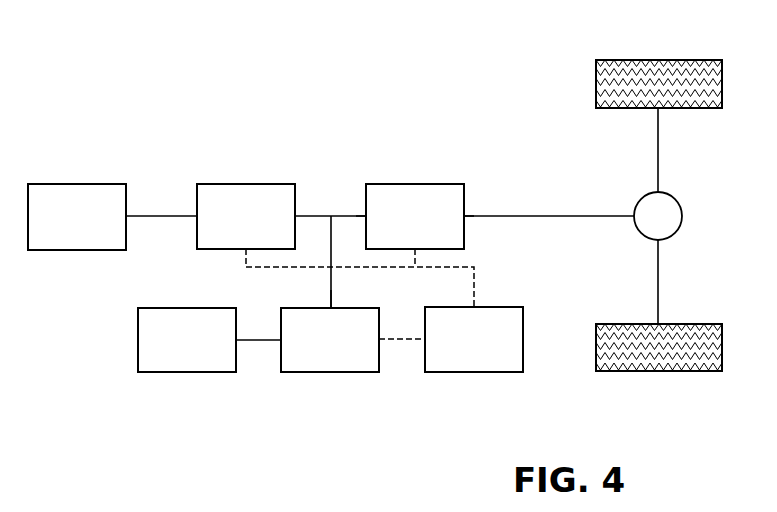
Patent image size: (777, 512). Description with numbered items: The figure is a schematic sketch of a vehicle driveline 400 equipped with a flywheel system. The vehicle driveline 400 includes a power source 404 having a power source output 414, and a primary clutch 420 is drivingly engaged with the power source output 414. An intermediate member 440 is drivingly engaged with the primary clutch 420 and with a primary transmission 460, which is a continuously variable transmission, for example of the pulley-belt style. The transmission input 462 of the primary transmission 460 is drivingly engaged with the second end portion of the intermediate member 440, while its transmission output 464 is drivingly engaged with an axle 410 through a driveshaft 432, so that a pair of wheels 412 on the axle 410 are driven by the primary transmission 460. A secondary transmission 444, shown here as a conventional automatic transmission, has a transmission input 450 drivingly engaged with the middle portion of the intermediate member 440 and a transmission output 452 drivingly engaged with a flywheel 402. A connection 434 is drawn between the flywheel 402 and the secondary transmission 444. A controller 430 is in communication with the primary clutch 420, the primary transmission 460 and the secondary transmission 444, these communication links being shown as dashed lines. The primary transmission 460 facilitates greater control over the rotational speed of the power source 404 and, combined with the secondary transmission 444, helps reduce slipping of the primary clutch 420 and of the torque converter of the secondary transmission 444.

The vehicle driveline 400 is at (217, 80).
The flywheel 402 is at (186, 372).
The power source 404 is at (77, 184).
The axle 410 is at (659, 282).
The wheels 412 is at (658, 60).
The power source output 414 is at (162, 216).
The primary clutch 420 is at (246, 184).
The controller 430 is at (472, 372).
The driveshaft 432 is at (575, 215).
The power line 434 is at (258, 340).
The intermediate member 440 is at (335, 215).
The secondary transmission 444 is at (330, 372).
The transmission input 450 is at (331, 302).
The transmission output 452 is at (282, 336).
The primary transmission 460 is at (415, 184).
The transmission input 462 is at (363, 215).
The transmission output 464 is at (466, 213).